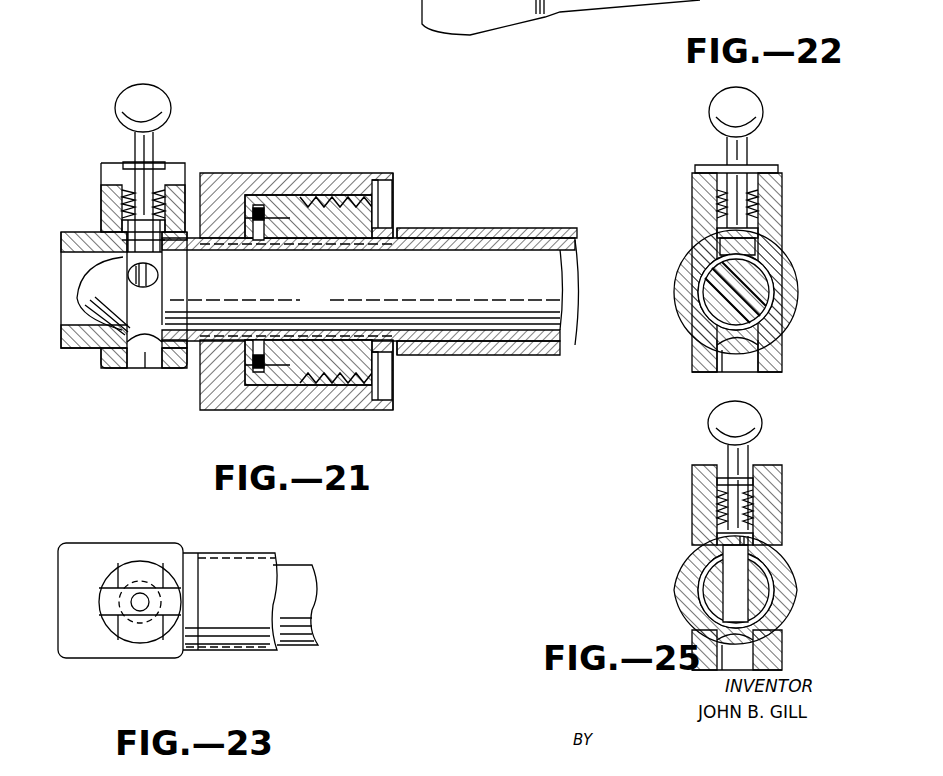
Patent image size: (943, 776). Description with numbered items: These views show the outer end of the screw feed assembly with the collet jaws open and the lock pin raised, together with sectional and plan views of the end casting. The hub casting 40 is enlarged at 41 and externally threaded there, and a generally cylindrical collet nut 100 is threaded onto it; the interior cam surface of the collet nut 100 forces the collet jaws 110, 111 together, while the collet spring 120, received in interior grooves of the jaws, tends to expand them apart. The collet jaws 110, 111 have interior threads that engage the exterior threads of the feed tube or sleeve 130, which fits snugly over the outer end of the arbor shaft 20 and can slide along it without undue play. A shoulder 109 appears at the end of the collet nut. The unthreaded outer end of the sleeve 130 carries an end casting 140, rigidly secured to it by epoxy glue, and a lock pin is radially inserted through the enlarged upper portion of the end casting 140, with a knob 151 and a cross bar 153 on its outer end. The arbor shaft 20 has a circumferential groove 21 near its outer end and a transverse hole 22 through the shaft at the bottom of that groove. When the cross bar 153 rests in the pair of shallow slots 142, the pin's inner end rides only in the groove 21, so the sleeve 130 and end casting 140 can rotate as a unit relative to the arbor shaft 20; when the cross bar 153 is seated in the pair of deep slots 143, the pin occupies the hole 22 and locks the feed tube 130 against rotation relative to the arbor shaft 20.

In FIG. 21, the arbor shaft 20 is at (382, 280).
In FIG. 22, the arbor shaft 20 is at (760, 290).
In FIG. 23, the arbor shaft 20 is at (305, 590).
In FIG. 22, the circumferential groove 21 is at (700, 262).
In FIG. 21, the transverse hole 22 is at (163, 44).
In FIG. 22, the transverse hole 22 is at (773, 275).
In FIG. 21, the hub casting 40 is at (460, 232).
In FIG. 21, the enlarged portion of hub casting 41 is at (362, 185).
In FIG. 21, the collet nut 100 is at (263, 178).
In FIG. 21, the shoulder 109 is at (395, 200).
In FIG. 21, the collet jaw 110 is at (297, 200).
In FIG. 21, the collet jaw 111 is at (275, 357).
In FIG. 21, the collet spring 120 is at (258, 210).
In FIG. 21, the feed tube or sleeve 130 is at (492, 240).
In FIG. 22, the feed tube or sleeve 130 is at (690, 322).
In FIG. 23, the feed tube or sleeve 130 is at (228, 565).
In FIG. 21, the end casting 140 is at (108, 207).
In FIG. 22, the end casting 140 is at (790, 307).
In FIG. 23, the end casting 140 is at (78, 556).
In FIG. 23, the shallow slots 142 is at (135, 570).
In FIG. 25, the shallow slots 142 is at (765, 468).
In FIG. 23, the deep slots 143 is at (108, 606).
In FIG. 25, the deep slots 143 is at (718, 478).
In FIG. 21, the knob 151 is at (157, 105).
In FIG. 22, the knob 151 is at (740, 100).
In FIG. 21, the cross bar 153 is at (157, 163).
In FIG. 22, the cross bar 153 is at (750, 170).